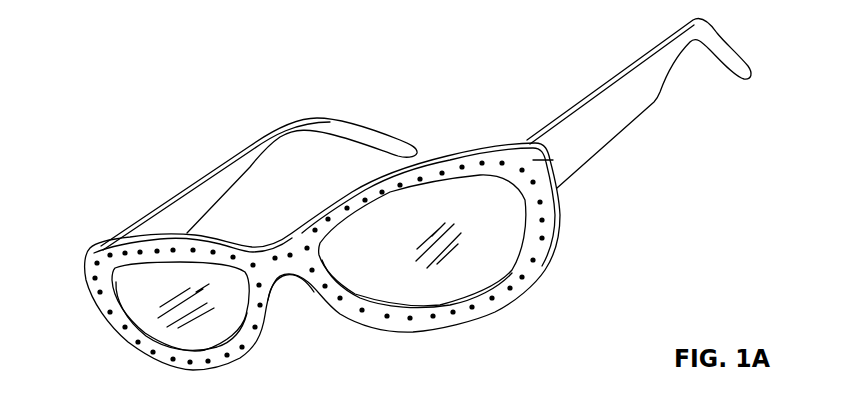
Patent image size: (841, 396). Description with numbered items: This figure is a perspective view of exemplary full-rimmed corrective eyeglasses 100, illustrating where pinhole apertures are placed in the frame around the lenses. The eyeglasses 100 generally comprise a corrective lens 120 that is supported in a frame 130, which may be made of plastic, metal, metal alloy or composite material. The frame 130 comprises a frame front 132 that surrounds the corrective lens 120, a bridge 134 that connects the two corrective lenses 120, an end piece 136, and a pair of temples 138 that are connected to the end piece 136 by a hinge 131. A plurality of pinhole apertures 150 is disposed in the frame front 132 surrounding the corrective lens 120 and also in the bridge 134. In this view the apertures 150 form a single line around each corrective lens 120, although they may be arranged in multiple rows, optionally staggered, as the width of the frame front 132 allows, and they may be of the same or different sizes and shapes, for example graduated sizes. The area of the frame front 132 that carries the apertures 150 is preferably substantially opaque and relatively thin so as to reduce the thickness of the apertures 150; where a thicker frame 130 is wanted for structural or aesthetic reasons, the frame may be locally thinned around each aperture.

The eyeglasses 100 is at (131, 76).
The corrective lens 120 is at (140, 315).
The frame 130 is at (565, 244).
The hinge 131 is at (103, 245).
The frame front 132 is at (480, 317).
The bridge 134 is at (283, 274).
The end piece 136 is at (553, 160).
The temples 138 is at (645, 51).
The pinhole apertures 150 is at (440, 169).